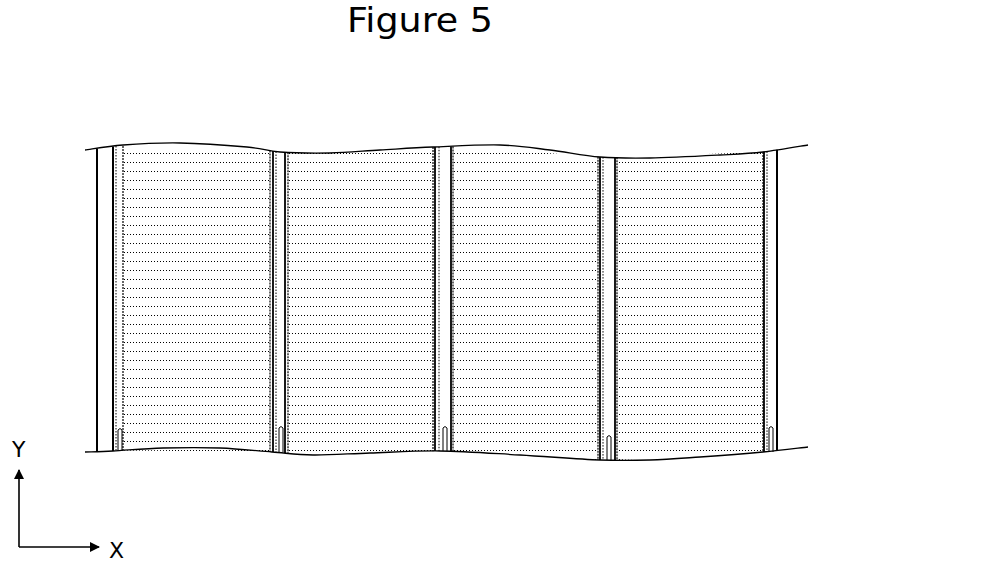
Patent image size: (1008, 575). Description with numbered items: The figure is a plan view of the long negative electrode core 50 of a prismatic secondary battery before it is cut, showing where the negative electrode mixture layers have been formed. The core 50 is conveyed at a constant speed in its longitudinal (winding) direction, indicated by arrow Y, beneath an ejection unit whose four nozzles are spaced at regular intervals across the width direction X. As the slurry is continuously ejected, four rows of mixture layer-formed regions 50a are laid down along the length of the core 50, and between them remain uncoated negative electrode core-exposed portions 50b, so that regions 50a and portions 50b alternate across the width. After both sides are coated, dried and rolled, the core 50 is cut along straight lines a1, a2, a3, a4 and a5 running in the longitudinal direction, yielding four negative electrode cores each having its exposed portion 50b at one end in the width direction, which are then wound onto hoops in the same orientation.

The negative electrode core 50 is at (507, 137).
The mixture layer-formed region 50a is at (229, 173).
The negative electrode core-exposed portion 50b is at (115, 162).
The cutting line a1 is at (118, 452).
The cutting line a2 is at (280, 453).
The cutting line a3 is at (444, 452).
The cutting line a4 is at (608, 460).
The cutting line a5 is at (771, 452).